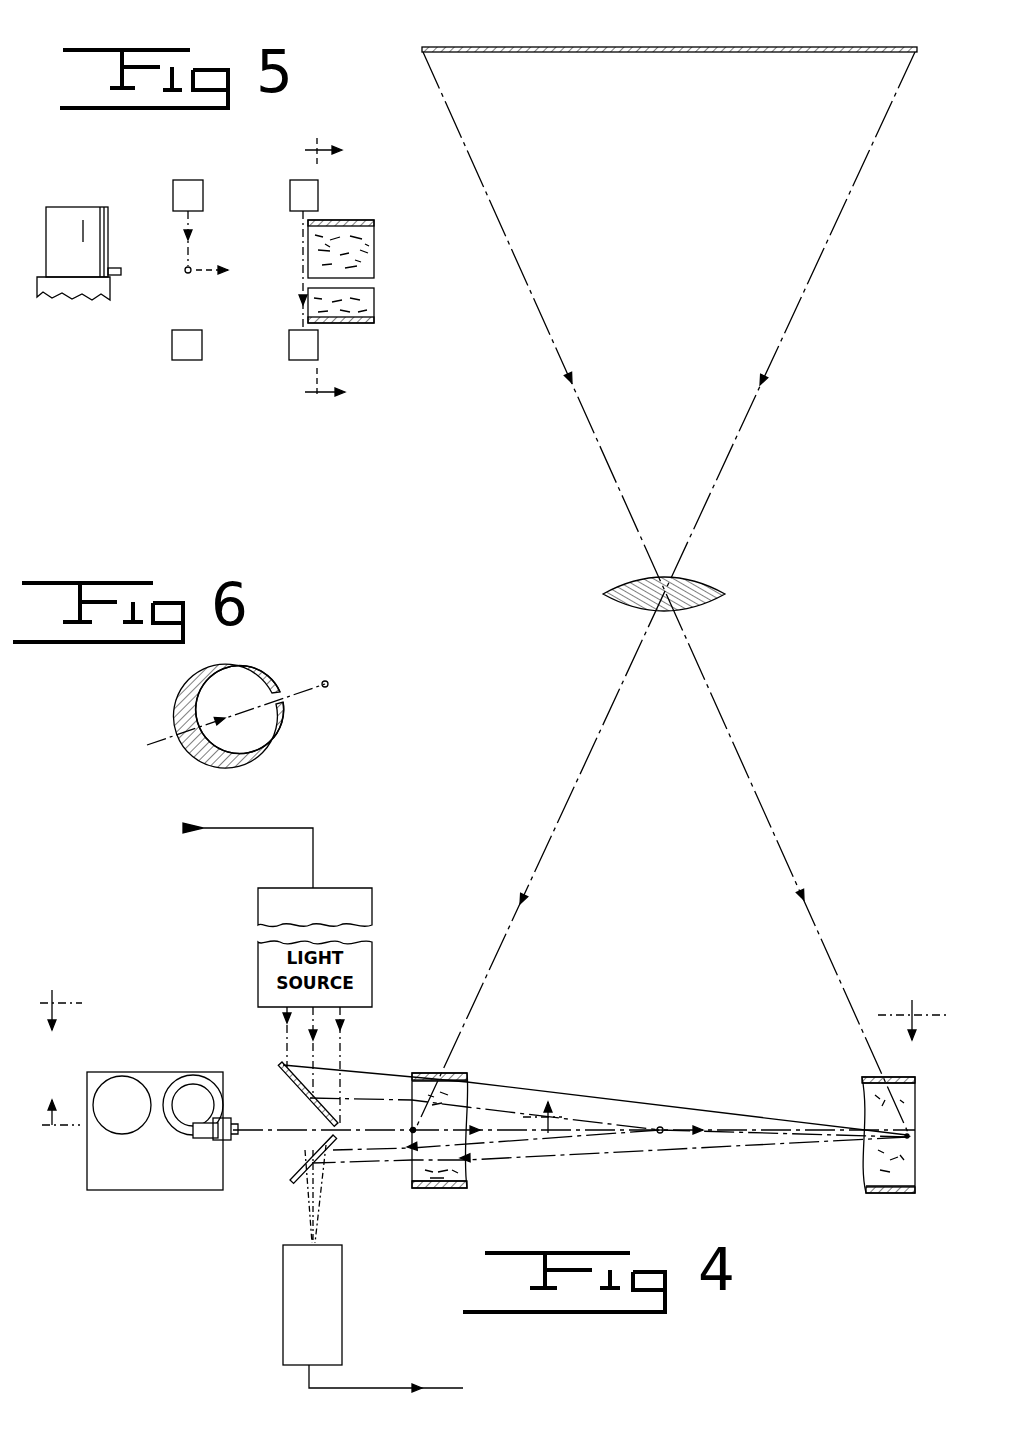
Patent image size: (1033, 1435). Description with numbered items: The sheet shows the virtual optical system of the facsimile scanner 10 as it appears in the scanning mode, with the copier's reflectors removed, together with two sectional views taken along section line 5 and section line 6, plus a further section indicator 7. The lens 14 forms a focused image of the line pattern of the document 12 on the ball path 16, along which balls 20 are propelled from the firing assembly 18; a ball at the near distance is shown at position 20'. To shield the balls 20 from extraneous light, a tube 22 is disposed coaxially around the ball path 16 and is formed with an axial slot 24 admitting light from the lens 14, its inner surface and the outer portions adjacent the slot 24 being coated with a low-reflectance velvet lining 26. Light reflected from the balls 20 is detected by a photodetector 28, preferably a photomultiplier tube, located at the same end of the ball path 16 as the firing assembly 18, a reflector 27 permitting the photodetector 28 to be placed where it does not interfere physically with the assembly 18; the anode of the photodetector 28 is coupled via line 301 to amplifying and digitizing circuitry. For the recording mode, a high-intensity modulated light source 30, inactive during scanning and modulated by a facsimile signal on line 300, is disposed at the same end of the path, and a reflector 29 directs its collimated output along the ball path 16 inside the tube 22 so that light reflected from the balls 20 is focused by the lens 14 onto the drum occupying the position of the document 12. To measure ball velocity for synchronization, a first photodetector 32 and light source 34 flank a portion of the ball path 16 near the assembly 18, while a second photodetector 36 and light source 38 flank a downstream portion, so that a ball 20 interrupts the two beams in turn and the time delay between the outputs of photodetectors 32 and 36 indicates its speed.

In FIG. 4, the facsimile scanner 10 is at (486, 1176).
In FIG. 4, the document 12 is at (808, 55).
In FIG. 4, the lens 14 is at (716, 570).
In FIG. 4, the ball path 16 is at (746, 1130).
In FIG. 5, the firing assembly 18 is at (62, 207).
In FIG. 4, the firing assembly 18 is at (153, 1072).
In FIG. 5, the balls 20 is at (143, 312).
In FIG. 6, the balls 20 is at (390, 679).
In FIG. 4, the balls 20 is at (769, 1178).
In FIG. 4, the near ball distance position 20' is at (411, 1077).
In FIG. 5, the tube 22 is at (360, 219).
In FIG. 6, the tube 22 is at (349, 637).
In FIG. 4, the tube 22 is at (420, 1190).
In FIG. 5, the axial slot 24 is at (365, 292).
In FIG. 6, the axial slot 24 is at (270, 697).
In FIG. 4, the axial slot 24 is at (455, 1077).
In FIG. 5, the lining 26 is at (350, 320).
In FIG. 6, the lining 26 is at (345, 705).
In FIG. 4, the reflector 27 is at (290, 1180).
In FIG. 4, the photodetector 28 is at (282, 1307).
In FIG. 4, the reflector 29 is at (286, 1073).
In FIG. 4, the modulated light source 30 is at (372, 908).
In FIG. 5, the first photodetector 32 is at (175, 360).
In FIG. 5, the light source 34 is at (180, 180).
In FIG. 5, the second photodetector 36 is at (292, 360).
In FIG. 5, the light source 38 is at (293, 180).
In FIG. 4, the line 300 is at (193, 832).
In FIG. 4, the line 301 is at (390, 1385).
In FIG. 4, the section line 5— 5 is at (297, 1108).
In FIG. 5, the section line 6— 6 is at (337, 273).
In FIG. 4, the section line indicator 7 is at (494, 1034).